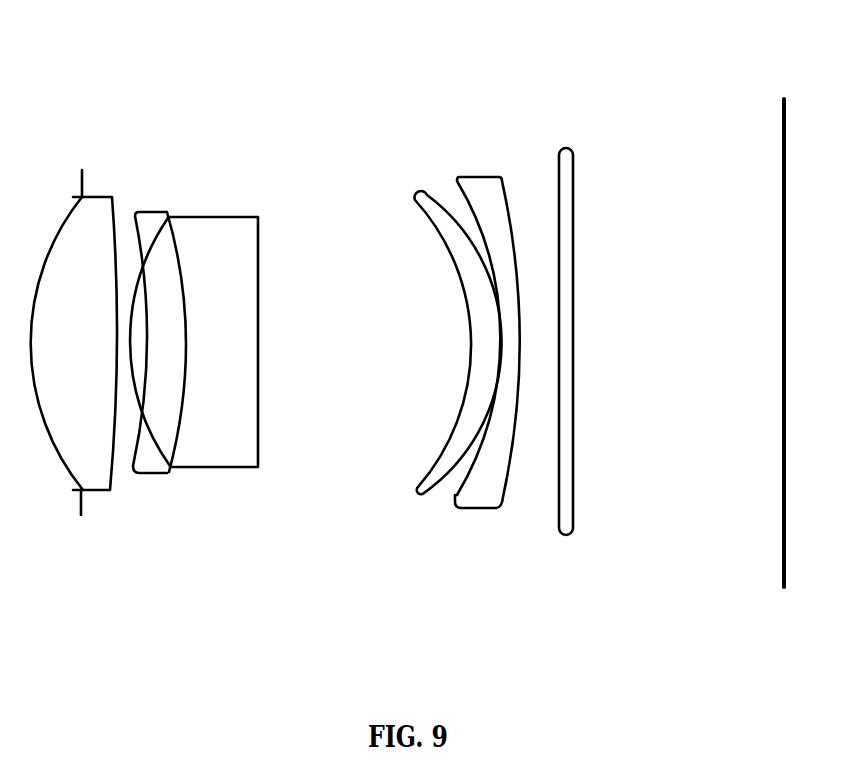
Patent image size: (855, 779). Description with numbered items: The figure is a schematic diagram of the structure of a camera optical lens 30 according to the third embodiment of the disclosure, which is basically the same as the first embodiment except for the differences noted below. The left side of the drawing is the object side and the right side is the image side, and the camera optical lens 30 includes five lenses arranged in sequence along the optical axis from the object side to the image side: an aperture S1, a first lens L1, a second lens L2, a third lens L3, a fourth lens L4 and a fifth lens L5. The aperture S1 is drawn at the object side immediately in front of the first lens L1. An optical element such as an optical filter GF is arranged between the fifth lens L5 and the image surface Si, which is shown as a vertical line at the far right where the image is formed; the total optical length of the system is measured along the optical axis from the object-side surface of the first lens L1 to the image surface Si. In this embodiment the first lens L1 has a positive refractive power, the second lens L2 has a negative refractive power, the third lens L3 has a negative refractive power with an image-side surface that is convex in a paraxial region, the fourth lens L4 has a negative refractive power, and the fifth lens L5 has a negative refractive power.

The camera optical lens 30 is at (380, 51).
The aperture S1 is at (81, 329).
The first lens L1 is at (74, 330).
The second lens L2 is at (159, 328).
The third lens L3 is at (194, 329).
The fourth lens L4 is at (457, 331).
The fifth lens L5 is at (487, 328).
The optical filter GF is at (571, 329).
The image surface Si is at (784, 330).